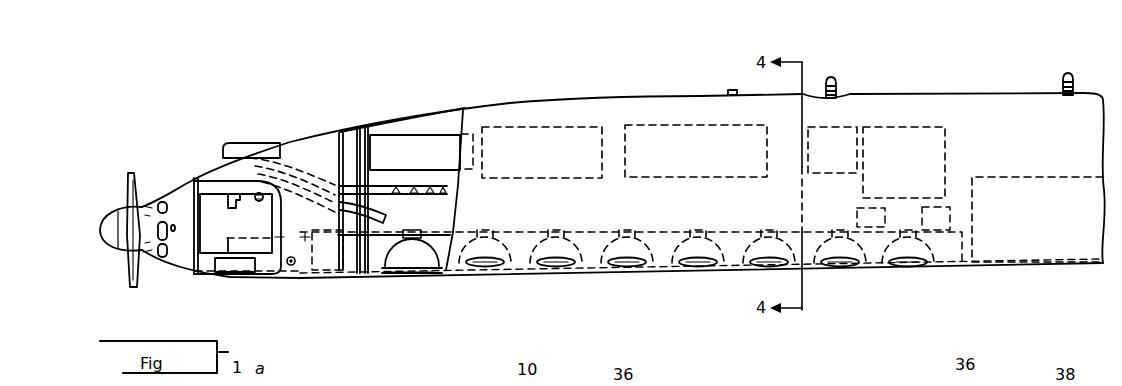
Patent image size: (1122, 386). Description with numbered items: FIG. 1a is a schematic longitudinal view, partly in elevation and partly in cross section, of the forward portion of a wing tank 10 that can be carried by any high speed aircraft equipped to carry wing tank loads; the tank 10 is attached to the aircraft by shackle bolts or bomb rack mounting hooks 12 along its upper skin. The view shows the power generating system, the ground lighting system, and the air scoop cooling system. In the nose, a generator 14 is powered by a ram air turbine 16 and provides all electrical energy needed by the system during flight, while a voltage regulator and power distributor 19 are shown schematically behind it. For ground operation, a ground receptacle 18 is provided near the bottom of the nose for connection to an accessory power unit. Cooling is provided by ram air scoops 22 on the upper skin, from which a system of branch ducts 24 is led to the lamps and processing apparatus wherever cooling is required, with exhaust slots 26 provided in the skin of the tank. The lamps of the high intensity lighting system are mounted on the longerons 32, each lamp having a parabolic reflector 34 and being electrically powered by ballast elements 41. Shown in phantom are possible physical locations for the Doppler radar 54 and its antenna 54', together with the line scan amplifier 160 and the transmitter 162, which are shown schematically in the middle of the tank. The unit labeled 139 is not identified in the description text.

The wing tank 10 is at (504, 103).
The bomb rack mounting hooks 12 is at (833, 77).
The generator 14 is at (212, 208).
The ram air turbine 16 is at (138, 206).
The ground receptacle 18 is at (290, 266).
The voltage regulator and power distributor 19 is at (412, 150).
The ram air scoops 22 is at (245, 143).
The branch ducts 24 is at (310, 172).
The exhaust slots 26 is at (552, 268).
The longerons 32 is at (720, 230).
The parabolic reflector 34 is at (409, 258).
The ballast elements 41 is at (405, 232).
The Doppler radar 54 is at (904, 130).
The Doppler radar antenna 54' is at (1037, 239).
The compartment 139 is at (838, 130).
The line scan amplifier 160 is at (553, 132).
The transmitter 162 is at (682, 130).